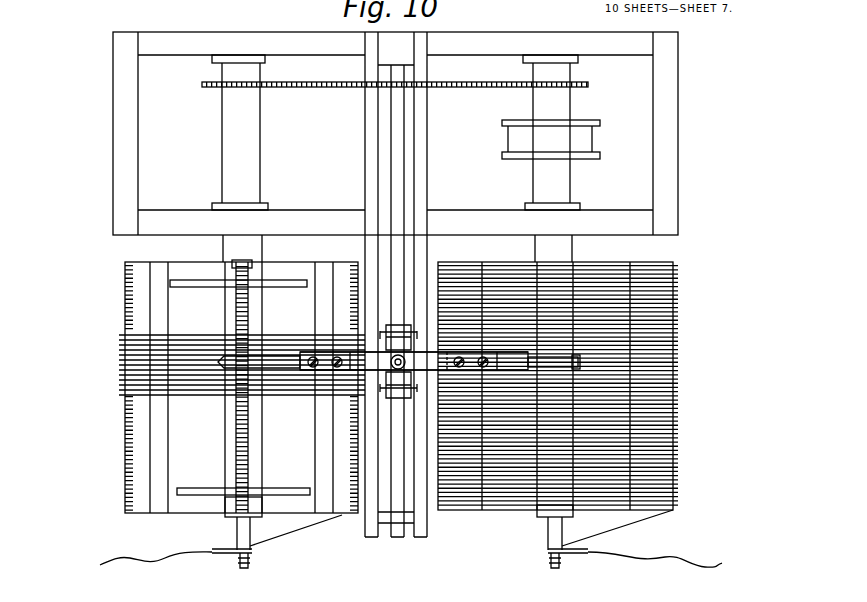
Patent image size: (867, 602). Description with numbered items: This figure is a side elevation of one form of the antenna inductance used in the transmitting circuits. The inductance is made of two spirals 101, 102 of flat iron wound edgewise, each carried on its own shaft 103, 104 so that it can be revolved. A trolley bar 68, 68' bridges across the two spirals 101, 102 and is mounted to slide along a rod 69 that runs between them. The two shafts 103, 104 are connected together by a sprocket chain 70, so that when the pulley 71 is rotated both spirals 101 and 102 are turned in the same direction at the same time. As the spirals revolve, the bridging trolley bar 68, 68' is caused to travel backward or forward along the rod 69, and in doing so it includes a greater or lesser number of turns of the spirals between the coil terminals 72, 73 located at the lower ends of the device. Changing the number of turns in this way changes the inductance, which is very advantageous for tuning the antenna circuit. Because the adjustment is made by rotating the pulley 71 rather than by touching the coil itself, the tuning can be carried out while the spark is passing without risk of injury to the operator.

The trolley bar 68 is at (399, 441).
The trolley bar 68' is at (414, 457).
The rod 69 is at (395, 183).
The sprocket chain 70 is at (309, 92).
The pulley 71 is at (588, 144).
The coil terminal 72 is at (120, 562).
The coil terminal 73 is at (715, 568).
The spiral 101 is at (160, 393).
The spiral 102 is at (653, 440).
The shaft 103 is at (226, 163).
The shaft 104 is at (544, 183).